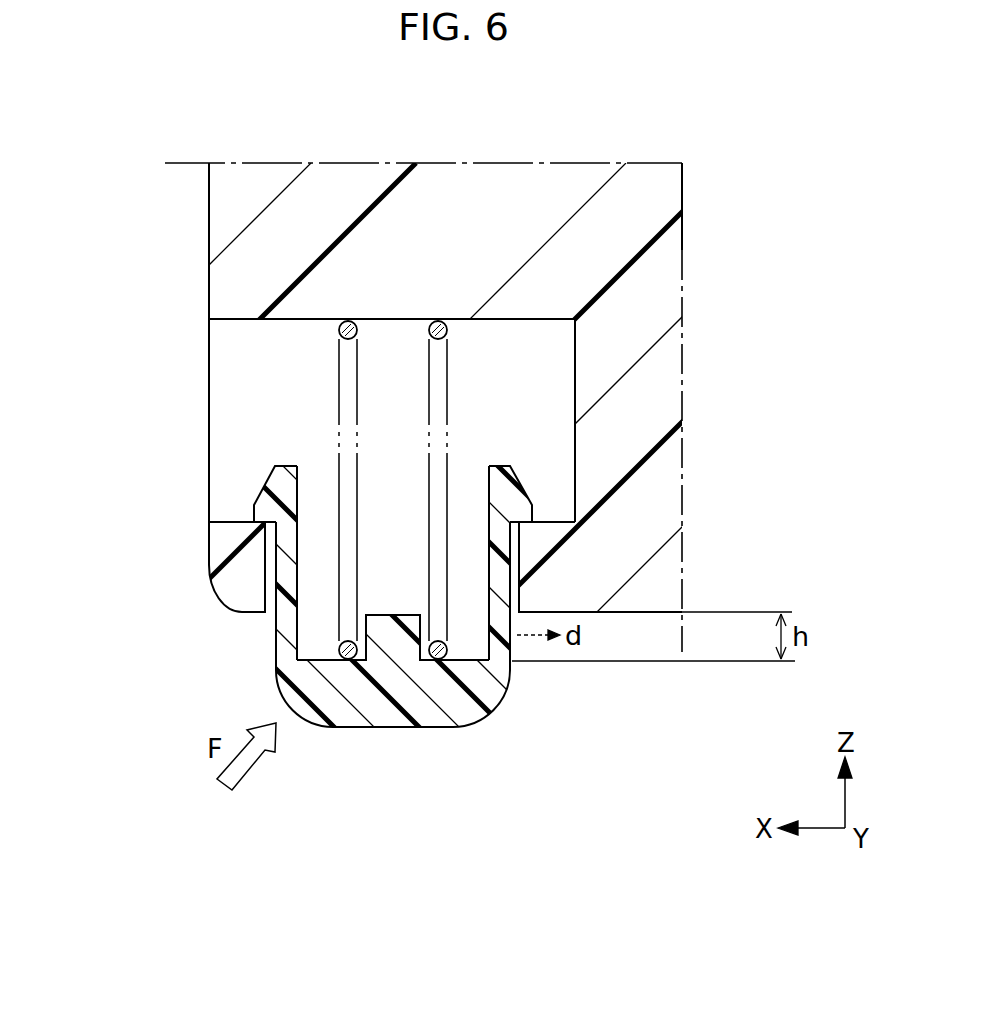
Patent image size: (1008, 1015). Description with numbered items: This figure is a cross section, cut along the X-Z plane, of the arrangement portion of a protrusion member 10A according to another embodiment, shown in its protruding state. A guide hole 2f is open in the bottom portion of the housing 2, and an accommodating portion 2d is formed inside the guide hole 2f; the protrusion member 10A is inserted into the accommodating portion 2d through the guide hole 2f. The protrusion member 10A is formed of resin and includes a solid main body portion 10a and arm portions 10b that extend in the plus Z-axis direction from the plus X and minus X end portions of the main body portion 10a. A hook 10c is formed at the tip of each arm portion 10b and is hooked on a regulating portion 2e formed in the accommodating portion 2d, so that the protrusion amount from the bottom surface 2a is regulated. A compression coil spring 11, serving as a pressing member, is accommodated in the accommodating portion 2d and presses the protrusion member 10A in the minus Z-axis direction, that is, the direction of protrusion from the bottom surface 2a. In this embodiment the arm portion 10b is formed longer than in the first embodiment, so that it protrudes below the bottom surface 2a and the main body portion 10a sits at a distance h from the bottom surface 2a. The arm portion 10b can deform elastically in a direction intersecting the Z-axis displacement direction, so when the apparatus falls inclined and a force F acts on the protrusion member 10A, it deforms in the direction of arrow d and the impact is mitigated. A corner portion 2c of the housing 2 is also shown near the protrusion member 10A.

The housing 2 is at (209, 233).
The bottom surface 2a is at (257, 620).
The corner portion 2c is at (232, 592).
The accommodating portion 2d is at (540, 387).
The regulating portion 2e is at (225, 520).
The guide hole 2f is at (222, 593).
The protrusion member 10A is at (429, 600).
The main body portion 10a is at (467, 708).
The arm portion 10b is at (296, 558).
The hook 10c is at (253, 513).
The compression coil spring 11 is at (339, 372).